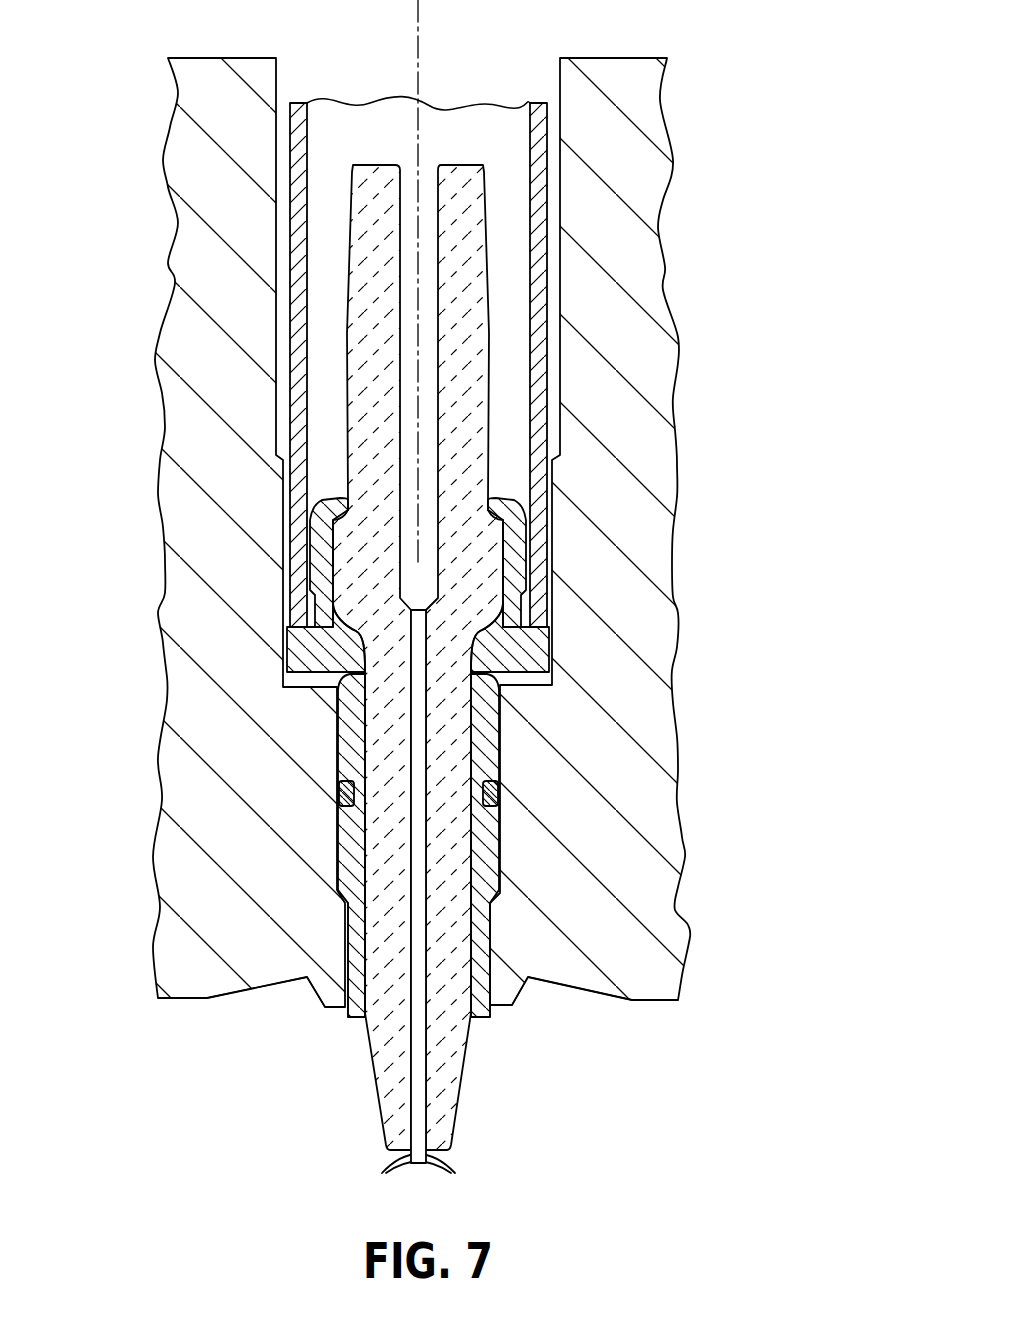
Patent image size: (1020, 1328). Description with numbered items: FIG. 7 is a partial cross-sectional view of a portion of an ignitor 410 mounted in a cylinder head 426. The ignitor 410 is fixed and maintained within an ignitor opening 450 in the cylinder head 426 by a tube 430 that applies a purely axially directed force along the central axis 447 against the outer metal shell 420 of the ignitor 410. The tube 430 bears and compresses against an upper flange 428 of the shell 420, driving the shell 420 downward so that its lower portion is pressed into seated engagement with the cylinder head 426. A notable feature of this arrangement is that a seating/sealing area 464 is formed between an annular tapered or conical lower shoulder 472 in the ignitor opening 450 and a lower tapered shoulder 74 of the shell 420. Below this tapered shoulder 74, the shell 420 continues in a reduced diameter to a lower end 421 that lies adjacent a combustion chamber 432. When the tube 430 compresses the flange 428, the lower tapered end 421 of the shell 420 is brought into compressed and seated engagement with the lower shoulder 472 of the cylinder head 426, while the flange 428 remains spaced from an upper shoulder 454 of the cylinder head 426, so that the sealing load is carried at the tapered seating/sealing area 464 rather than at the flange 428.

The ignitor 410 is at (474, 586).
The cylinder head 426 is at (627, 228).
The central axis 447 is at (424, 65).
The tube 430 is at (547, 383).
The outer metal shell 420 is at (517, 517).
The upper flange 428 is at (540, 650).
The upper shoulder 454 is at (548, 681).
The ignitor opening 450 is at (338, 762).
The lower shoulder 472 is at (338, 893).
The seating/sealing area 464 is at (523, 877).
The lower tapered shoulder 74 is at (495, 898).
The lower end 421 is at (478, 1020).
The combustion chamber 432 is at (260, 1155).